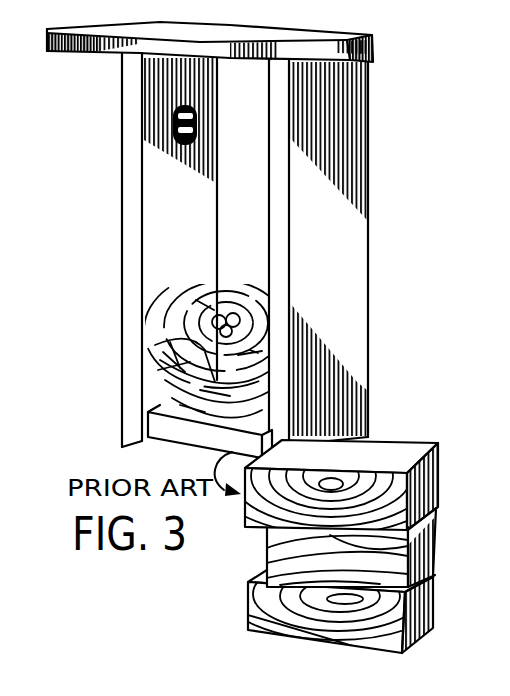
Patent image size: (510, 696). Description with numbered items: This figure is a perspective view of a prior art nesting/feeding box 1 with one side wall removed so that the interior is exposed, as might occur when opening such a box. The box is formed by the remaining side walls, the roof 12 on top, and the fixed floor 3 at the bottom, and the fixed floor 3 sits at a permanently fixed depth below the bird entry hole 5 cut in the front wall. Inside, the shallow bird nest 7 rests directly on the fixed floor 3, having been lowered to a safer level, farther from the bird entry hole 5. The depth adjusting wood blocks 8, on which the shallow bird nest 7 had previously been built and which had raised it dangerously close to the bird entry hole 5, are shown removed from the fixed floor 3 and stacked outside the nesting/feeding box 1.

The nesting/feeding box 1 is at (233, 240).
The roof 12 is at (139, 57).
The bird entry hole 5 is at (199, 141).
The shallow bird nest 7 is at (167, 380).
The fixed floor 3 is at (178, 438).
The depth adjusting wood blocks 8 is at (445, 433).